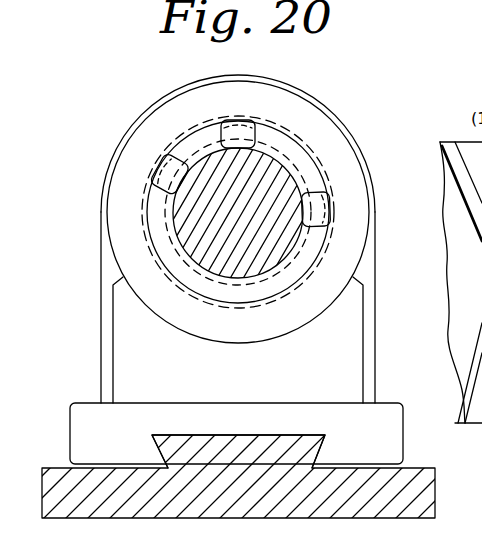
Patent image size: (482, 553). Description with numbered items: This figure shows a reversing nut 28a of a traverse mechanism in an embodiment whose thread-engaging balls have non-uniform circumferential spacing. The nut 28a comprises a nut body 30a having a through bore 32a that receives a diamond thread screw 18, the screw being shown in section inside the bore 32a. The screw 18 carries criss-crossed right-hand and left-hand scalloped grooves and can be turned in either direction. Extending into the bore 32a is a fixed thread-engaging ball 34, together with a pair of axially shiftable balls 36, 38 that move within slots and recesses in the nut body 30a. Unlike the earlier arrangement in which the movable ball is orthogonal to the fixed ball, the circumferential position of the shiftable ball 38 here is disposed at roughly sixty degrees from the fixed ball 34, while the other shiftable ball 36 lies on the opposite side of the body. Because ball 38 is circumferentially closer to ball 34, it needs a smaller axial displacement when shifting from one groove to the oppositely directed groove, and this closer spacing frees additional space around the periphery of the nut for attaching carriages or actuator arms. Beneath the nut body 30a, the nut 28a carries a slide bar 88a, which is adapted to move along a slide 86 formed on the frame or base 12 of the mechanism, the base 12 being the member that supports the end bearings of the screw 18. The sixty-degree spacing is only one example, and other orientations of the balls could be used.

The frame or base 12 is at (418, 494).
The diamond thread screw 18 is at (200, 210).
The reversing nut 28a is at (334, 100).
The nut body 30a is at (337, 152).
The through bore 32a is at (203, 260).
The thread-engaging ball 34 is at (236, 118).
The axially shiftable ball 36 is at (322, 213).
The axially shiftable ball 38 is at (170, 172).
The slide 86 is at (270, 442).
The slide bar 88a is at (390, 446).